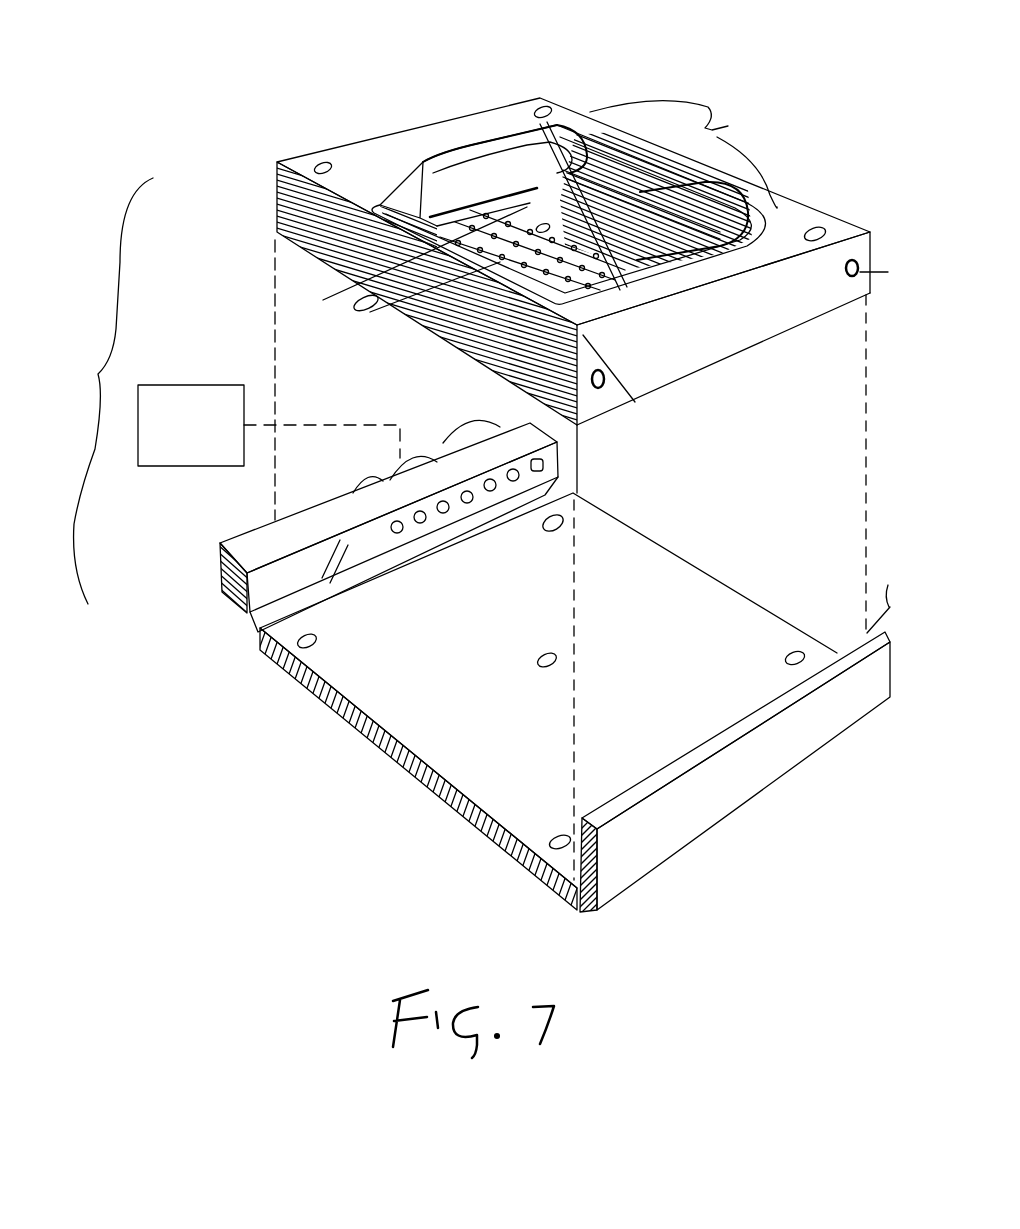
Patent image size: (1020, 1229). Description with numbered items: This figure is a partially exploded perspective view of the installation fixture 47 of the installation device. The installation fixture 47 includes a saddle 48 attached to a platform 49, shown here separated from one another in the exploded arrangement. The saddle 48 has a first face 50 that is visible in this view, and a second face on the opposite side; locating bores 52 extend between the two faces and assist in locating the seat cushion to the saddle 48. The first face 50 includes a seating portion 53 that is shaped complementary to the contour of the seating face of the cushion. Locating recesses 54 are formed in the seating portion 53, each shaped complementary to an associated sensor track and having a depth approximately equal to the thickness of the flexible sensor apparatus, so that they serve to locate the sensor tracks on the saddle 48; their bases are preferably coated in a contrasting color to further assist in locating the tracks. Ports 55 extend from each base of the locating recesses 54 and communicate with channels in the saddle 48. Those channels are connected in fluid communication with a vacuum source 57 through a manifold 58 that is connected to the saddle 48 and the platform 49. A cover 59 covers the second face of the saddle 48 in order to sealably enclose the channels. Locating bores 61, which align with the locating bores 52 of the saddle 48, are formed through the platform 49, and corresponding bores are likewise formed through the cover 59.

The installation fixture 47 is at (96, 354).
The saddle 48 is at (272, 194).
The platform 49 is at (473, 813).
The first face 50 is at (800, 207).
The locating bores 52 is at (323, 160).
The seating portion 53 is at (574, 223).
The locating recesses 54 is at (500, 209).
The ports 55 is at (410, 273).
The vacuum source 57 is at (175, 471).
The manifold 58 is at (224, 600).
The cover 59 is at (710, 362).
The locating bores 61 is at (318, 647).